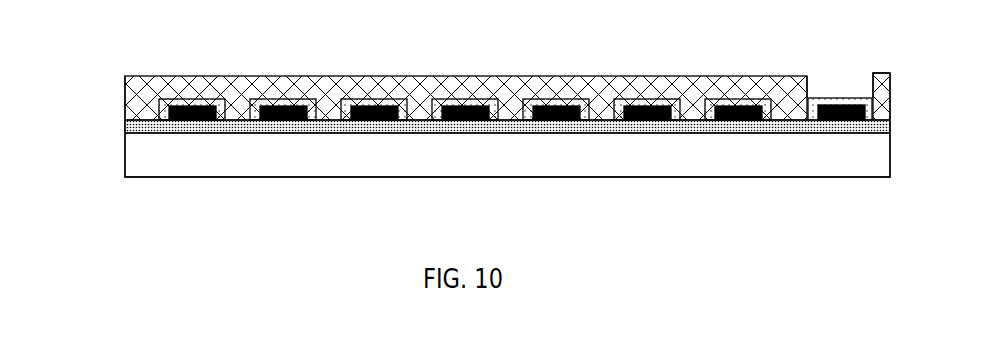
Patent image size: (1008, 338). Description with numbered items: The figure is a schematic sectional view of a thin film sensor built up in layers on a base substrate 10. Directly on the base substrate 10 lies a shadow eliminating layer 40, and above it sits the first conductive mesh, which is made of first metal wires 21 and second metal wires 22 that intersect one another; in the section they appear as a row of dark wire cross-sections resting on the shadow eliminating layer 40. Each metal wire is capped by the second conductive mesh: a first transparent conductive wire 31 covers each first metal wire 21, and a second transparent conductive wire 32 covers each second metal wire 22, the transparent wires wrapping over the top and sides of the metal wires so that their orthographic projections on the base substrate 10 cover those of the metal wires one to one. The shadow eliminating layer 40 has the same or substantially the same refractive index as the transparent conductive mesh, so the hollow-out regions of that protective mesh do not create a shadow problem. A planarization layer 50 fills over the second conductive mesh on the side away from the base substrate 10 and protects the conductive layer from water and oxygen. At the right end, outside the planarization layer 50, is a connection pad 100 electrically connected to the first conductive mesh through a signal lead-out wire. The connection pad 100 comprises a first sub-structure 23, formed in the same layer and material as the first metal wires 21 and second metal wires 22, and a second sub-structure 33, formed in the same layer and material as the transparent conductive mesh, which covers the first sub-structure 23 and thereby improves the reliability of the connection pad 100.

The connection pad 100 is at (815, 35).
The base substrate 10 is at (147, 161).
The shadow eliminating layer 40 is at (126, 127).
The planarization layer 50 is at (128, 100).
The first metal wires 21 is at (200, 120).
The second metal wires 22 is at (287, 120).
The first sub-structure 23 is at (853, 105).
The first transparent conductive wires 31 is at (164, 118).
The second transparent conductive wires 32 is at (257, 118).
The second sub-structure 33 is at (825, 98).